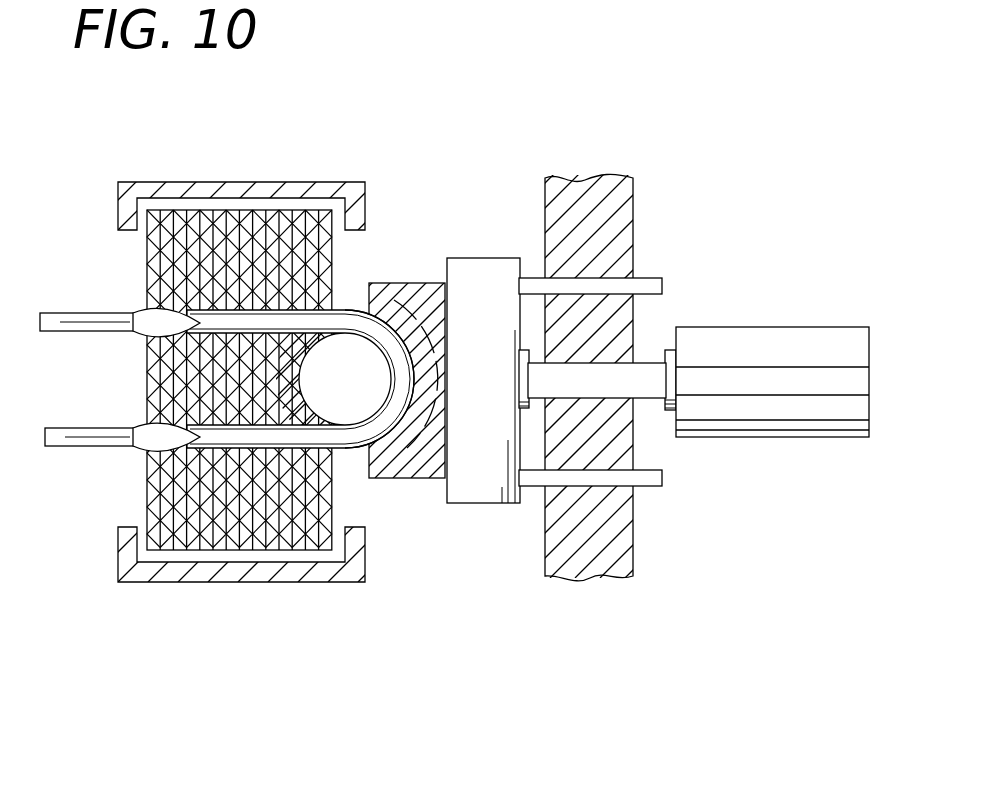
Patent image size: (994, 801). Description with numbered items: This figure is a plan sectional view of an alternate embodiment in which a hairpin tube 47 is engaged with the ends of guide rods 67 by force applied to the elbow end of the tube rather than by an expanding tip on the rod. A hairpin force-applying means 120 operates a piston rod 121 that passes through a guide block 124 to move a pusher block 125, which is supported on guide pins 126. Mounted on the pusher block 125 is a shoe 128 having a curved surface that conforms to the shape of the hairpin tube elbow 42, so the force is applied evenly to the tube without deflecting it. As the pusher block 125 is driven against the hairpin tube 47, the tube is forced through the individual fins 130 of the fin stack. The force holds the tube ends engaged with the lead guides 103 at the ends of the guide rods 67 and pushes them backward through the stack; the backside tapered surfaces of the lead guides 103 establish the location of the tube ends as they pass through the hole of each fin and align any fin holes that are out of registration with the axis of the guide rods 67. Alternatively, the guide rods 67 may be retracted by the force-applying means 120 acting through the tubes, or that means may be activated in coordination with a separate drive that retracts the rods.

The fins 130 is at (147, 270).
The guide rod 67 is at (73, 312).
The lead guide 103 is at (148, 436).
The hairpin tube 47 is at (347, 320).
The hairpin tube elbow 42 is at (385, 382).
The shoe 128 is at (423, 480).
The pusher block 125 is at (480, 272).
The guide block 124 is at (635, 530).
The piston rod 121 is at (655, 363).
The hairpin force-applying means 120 is at (767, 347).
The guide pins 126 is at (662, 476).